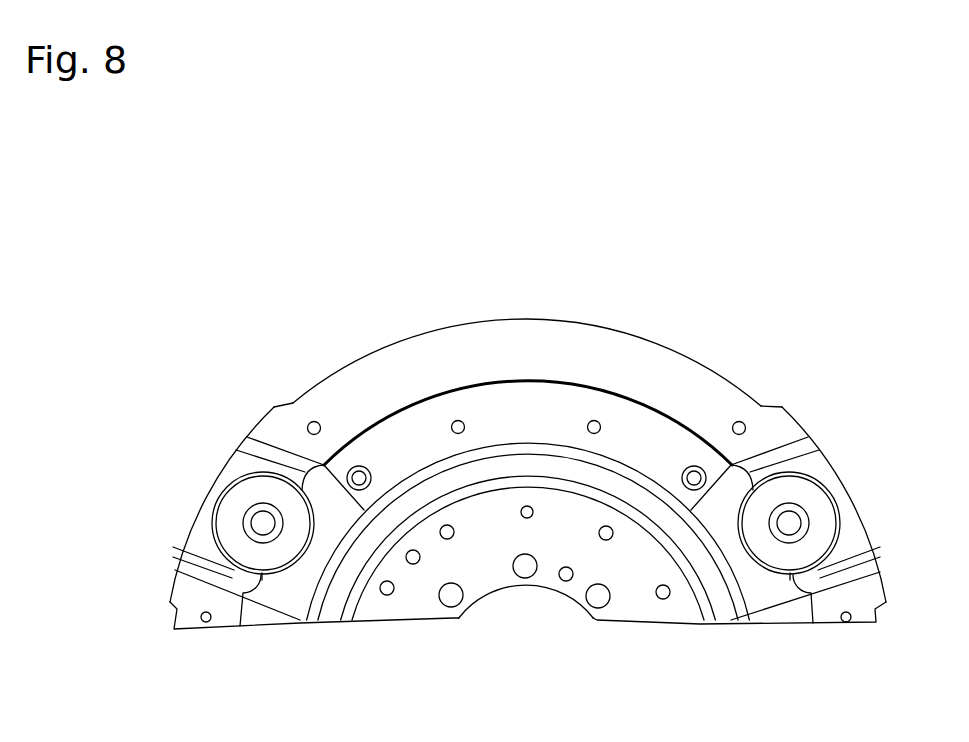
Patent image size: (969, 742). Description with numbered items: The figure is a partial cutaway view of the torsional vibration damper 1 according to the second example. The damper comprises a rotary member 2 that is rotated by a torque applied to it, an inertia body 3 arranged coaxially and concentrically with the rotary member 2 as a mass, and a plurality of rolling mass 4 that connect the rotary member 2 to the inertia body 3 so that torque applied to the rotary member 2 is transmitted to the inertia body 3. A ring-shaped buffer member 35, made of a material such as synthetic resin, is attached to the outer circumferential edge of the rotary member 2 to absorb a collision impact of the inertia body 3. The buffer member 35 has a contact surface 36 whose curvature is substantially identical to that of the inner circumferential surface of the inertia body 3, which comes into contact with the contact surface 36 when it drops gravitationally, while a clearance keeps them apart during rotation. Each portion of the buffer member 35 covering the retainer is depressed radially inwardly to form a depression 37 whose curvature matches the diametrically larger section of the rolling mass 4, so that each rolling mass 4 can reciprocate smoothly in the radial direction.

The torsional vibration damper 1 is at (704, 277).
The rotary member 2 is at (670, 610).
The inertia body 3 is at (693, 370).
The rolling mass 4 is at (222, 491).
The buffer member 35 is at (562, 412).
The contact surface 36 is at (527, 382).
The depression 37 is at (280, 590).